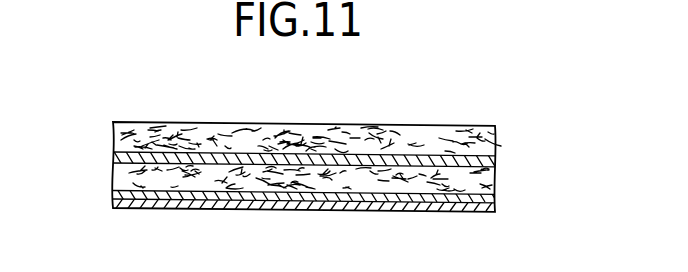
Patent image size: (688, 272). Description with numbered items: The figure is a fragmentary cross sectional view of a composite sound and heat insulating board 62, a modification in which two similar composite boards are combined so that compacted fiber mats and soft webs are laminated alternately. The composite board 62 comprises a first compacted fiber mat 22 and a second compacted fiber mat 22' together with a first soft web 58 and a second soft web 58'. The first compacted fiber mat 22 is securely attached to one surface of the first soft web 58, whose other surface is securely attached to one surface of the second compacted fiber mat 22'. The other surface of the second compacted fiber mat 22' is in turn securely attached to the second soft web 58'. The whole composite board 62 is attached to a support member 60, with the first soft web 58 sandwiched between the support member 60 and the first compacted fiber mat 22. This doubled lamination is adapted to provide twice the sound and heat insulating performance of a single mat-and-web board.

The composite sound and heat insulating board 62 is at (510, 114).
The second compacted fiber mat 22' is at (307, 112).
The second soft web 58' is at (274, 142).
The first compacted fiber mat 22 is at (332, 173).
The first soft web 58 is at (277, 206).
The support member 60 is at (336, 210).